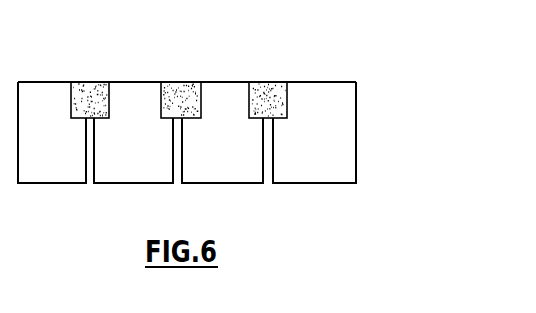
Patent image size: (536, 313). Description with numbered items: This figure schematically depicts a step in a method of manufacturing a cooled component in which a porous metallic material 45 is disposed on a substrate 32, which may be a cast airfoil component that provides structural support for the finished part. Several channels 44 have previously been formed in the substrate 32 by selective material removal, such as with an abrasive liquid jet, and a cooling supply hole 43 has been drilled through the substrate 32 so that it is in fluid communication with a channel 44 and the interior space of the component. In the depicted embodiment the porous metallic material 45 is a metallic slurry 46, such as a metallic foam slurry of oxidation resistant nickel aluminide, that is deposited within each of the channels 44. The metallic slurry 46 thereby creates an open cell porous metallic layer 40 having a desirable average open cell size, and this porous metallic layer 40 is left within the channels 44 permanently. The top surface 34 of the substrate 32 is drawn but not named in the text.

The substrate 32 is at (342, 128).
The top surface layer 34 is at (227, 82).
The open cell porous metallic layer 40 is at (82, 87).
The cooling supply hole 43 is at (268, 172).
The channel 44 is at (268, 102).
The porous metallic material 45 is at (175, 87).
The metallic slurry 46 is at (93, 86).